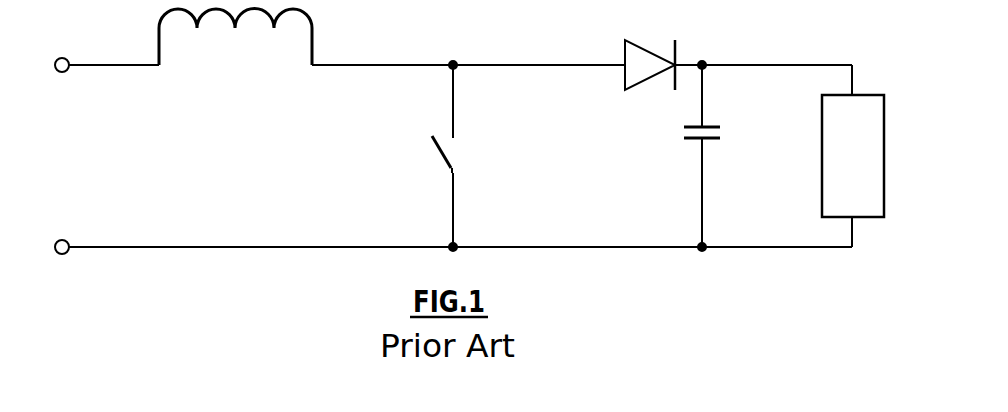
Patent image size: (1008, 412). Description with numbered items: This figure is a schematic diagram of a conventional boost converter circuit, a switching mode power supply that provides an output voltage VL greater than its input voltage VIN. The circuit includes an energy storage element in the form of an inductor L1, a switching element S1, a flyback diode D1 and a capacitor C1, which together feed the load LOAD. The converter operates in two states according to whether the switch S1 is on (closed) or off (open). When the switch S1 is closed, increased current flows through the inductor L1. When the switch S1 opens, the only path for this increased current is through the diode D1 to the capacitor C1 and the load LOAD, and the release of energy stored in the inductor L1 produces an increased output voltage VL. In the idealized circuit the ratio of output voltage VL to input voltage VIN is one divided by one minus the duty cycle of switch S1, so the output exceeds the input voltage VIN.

The inductor L1 is at (235, 48).
The switching element S1 is at (463, 156).
The flyback diode D1 is at (650, 76).
The capacitor C1 is at (718, 156).
The load LOAD is at (853, 156).
The input voltage VIN is at (61, 90).
The output voltage VL is at (793, 90).